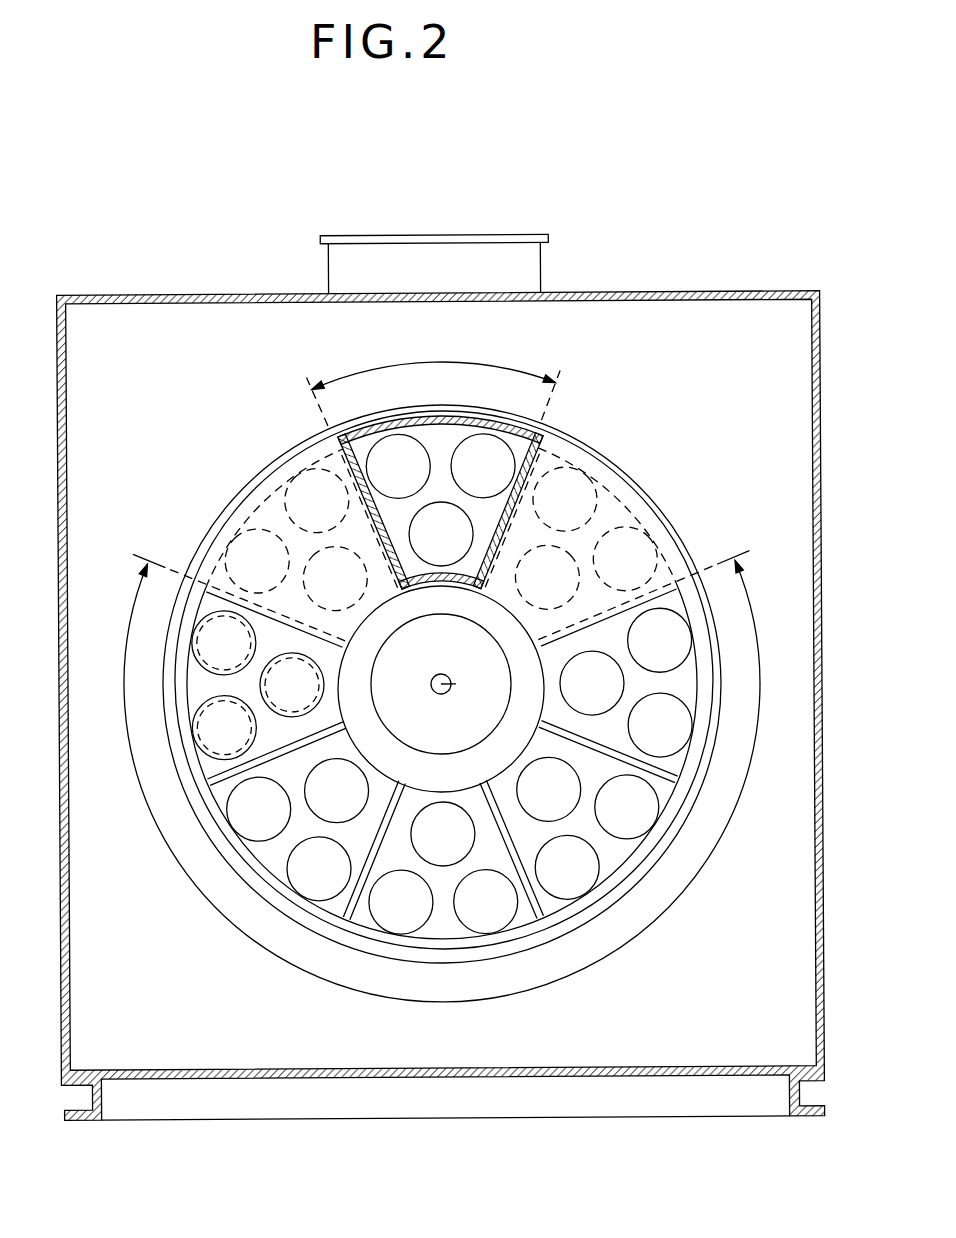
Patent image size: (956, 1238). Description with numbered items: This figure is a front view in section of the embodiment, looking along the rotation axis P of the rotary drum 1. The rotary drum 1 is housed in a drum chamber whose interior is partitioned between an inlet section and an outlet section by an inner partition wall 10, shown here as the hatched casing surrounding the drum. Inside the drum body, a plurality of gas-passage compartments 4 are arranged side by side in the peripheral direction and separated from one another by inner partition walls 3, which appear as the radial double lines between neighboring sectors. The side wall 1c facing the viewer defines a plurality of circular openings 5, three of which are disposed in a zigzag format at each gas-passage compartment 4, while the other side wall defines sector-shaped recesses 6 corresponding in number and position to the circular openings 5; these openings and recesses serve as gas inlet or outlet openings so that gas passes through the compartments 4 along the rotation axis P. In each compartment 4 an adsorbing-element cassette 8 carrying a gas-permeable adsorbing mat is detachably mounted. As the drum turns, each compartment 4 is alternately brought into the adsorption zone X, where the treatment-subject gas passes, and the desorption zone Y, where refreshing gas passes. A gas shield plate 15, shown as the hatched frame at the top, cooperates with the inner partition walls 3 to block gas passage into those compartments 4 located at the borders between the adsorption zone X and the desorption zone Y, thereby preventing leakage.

The inner partition wall 10 is at (694, 333).
The rotary drum 1 is at (687, 822).
The one side wall 1c is at (688, 683).
The sector-shaped recesses 6 is at (702, 718).
The inner partition walls 3 is at (220, 795).
The gas shield plate 15 is at (683, 548).
The gas-passage compartments 4 is at (555, 905).
The adsorbing-element cassette 8 is at (190, 633).
The circular openings 5 is at (205, 662).
The rotation axis P is at (456, 684).
The adsorption zone X is at (442, 777).
The desorption zone Y is at (456, 370).